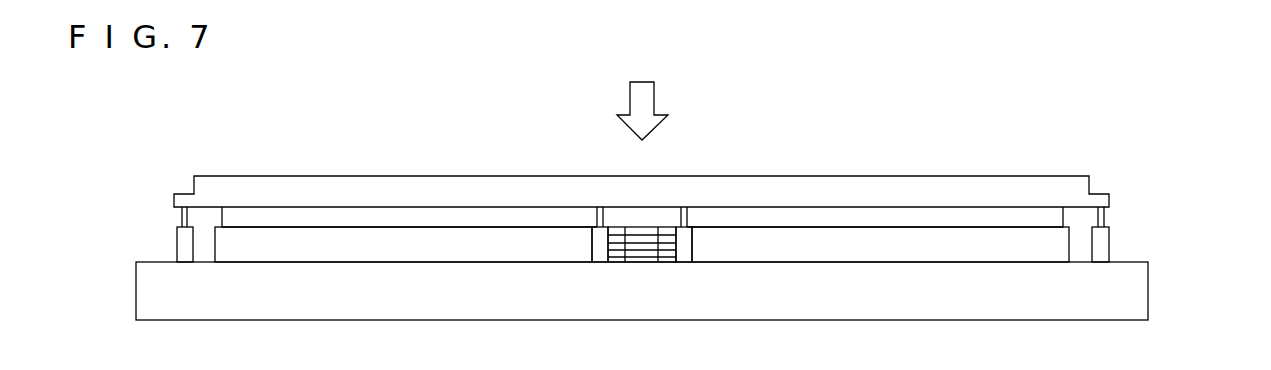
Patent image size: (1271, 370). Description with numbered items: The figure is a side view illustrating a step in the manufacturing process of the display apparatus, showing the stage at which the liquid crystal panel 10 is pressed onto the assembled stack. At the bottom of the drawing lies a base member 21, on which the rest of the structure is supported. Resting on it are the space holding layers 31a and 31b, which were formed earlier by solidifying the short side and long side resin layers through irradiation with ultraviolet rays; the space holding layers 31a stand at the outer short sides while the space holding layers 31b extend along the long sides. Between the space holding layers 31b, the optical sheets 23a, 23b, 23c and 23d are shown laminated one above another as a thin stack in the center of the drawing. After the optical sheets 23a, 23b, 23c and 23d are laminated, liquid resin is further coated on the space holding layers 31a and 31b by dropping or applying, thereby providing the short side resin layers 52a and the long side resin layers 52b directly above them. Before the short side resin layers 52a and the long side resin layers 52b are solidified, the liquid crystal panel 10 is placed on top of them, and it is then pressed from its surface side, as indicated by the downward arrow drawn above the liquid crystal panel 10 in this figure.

The liquid crystal panel 10 is at (978, 183).
The base 21 is at (1140, 293).
The optical sheet 23a is at (665, 258).
The optical sheet 23b is at (672, 252).
The optical sheet 23c is at (672, 243).
The optical sheet 23d is at (661, 237).
The space holding layer 31a is at (180, 240).
The space holding layer 31b is at (382, 255).
The short side resin layer 52a is at (184, 222).
The long side resin layer 52b is at (382, 213).